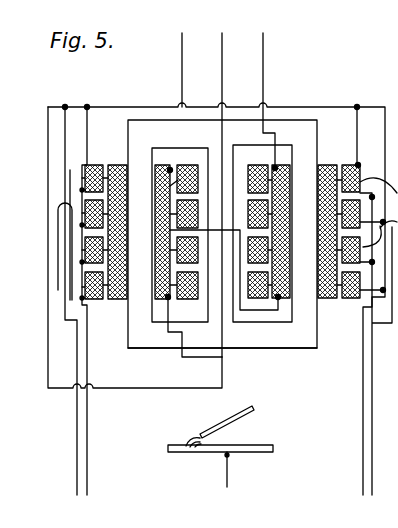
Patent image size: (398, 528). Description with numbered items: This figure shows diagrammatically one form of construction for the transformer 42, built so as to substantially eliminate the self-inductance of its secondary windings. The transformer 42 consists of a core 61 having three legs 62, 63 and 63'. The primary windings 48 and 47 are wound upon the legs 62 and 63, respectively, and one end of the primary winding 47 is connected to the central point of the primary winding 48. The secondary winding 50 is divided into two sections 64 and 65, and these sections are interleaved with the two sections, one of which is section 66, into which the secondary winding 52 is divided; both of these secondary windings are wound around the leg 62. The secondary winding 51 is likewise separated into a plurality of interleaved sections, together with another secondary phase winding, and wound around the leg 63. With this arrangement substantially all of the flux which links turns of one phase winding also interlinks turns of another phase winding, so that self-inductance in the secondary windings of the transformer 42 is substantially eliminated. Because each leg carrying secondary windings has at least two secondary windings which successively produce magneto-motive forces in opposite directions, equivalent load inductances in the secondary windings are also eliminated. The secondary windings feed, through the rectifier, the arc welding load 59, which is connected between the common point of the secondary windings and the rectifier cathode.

The transformer 42 is at (308, 357).
The primary winding 47 is at (346, 301).
The primary winding 48 is at (118, 165).
The secondary winding 50 is at (205, 293).
The secondary winding 51 is at (318, 278).
The secondary winding 52 is at (79, 286).
The arc welding load 59 is at (253, 419).
The core 61 is at (70, 284).
The leg 62 is at (205, 242).
The leg 63 is at (270, 228).
The leg 63' is at (195, 213).
The section 64 is at (156, 214).
The section 65 is at (153, 238).
The section 66 is at (78, 220).